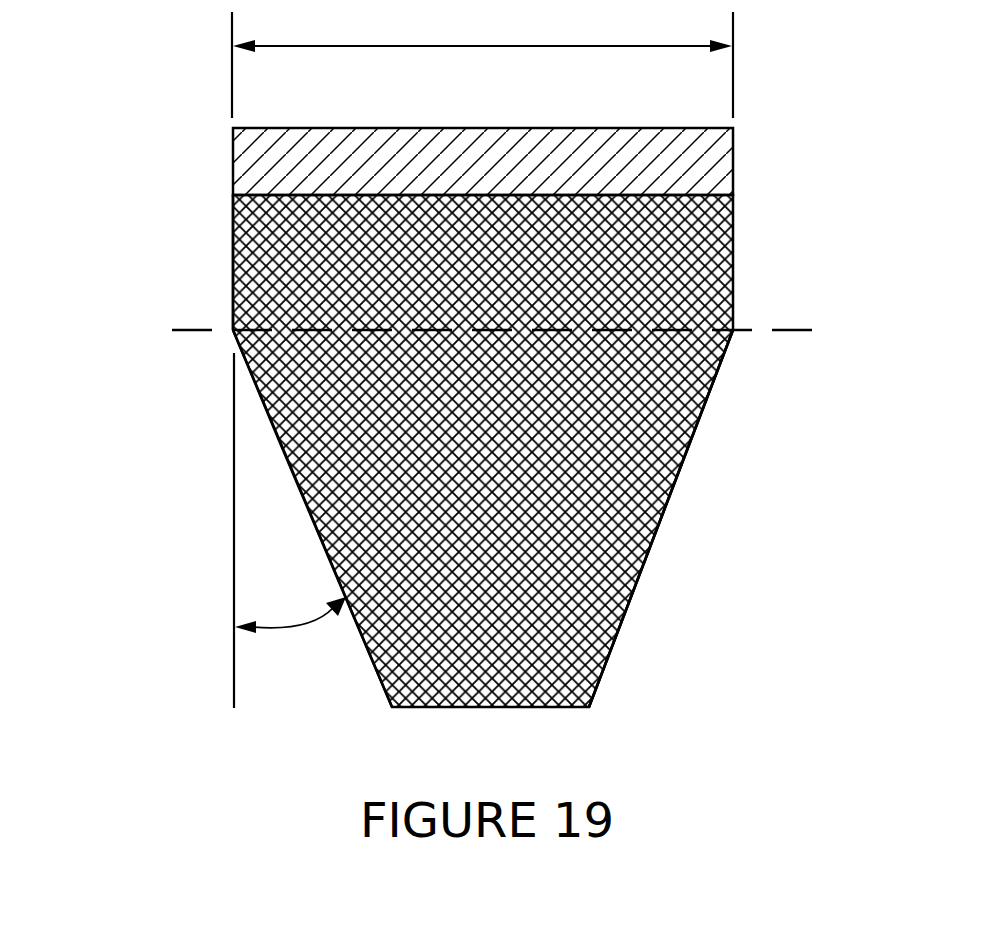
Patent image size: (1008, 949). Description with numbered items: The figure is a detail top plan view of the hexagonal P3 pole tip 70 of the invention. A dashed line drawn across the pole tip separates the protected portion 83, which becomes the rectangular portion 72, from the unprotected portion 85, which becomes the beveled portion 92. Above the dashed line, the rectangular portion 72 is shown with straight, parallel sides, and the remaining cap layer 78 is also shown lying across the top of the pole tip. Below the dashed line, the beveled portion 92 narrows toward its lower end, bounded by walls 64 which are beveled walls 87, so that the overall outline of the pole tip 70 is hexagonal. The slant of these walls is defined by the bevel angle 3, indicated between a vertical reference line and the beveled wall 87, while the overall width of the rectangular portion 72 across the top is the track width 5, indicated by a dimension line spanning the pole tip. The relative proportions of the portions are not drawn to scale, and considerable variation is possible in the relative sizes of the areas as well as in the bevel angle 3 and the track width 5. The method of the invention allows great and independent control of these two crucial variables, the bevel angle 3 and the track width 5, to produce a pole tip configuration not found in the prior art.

The track width 5 is at (462, 47).
The hexagonal P3 pole tip 70 is at (471, 400).
The remaining cap layer 78 is at (720, 165).
The rectangular portion 72 is at (733, 270).
The protected portion 83 is at (233, 300).
The beveled walls 87 is at (280, 435).
The beveled portion 92 is at (683, 428).
The unprotected portion 85 is at (750, 407).
The walls 64 is at (300, 490).
The bevel angle 3 is at (300, 627).